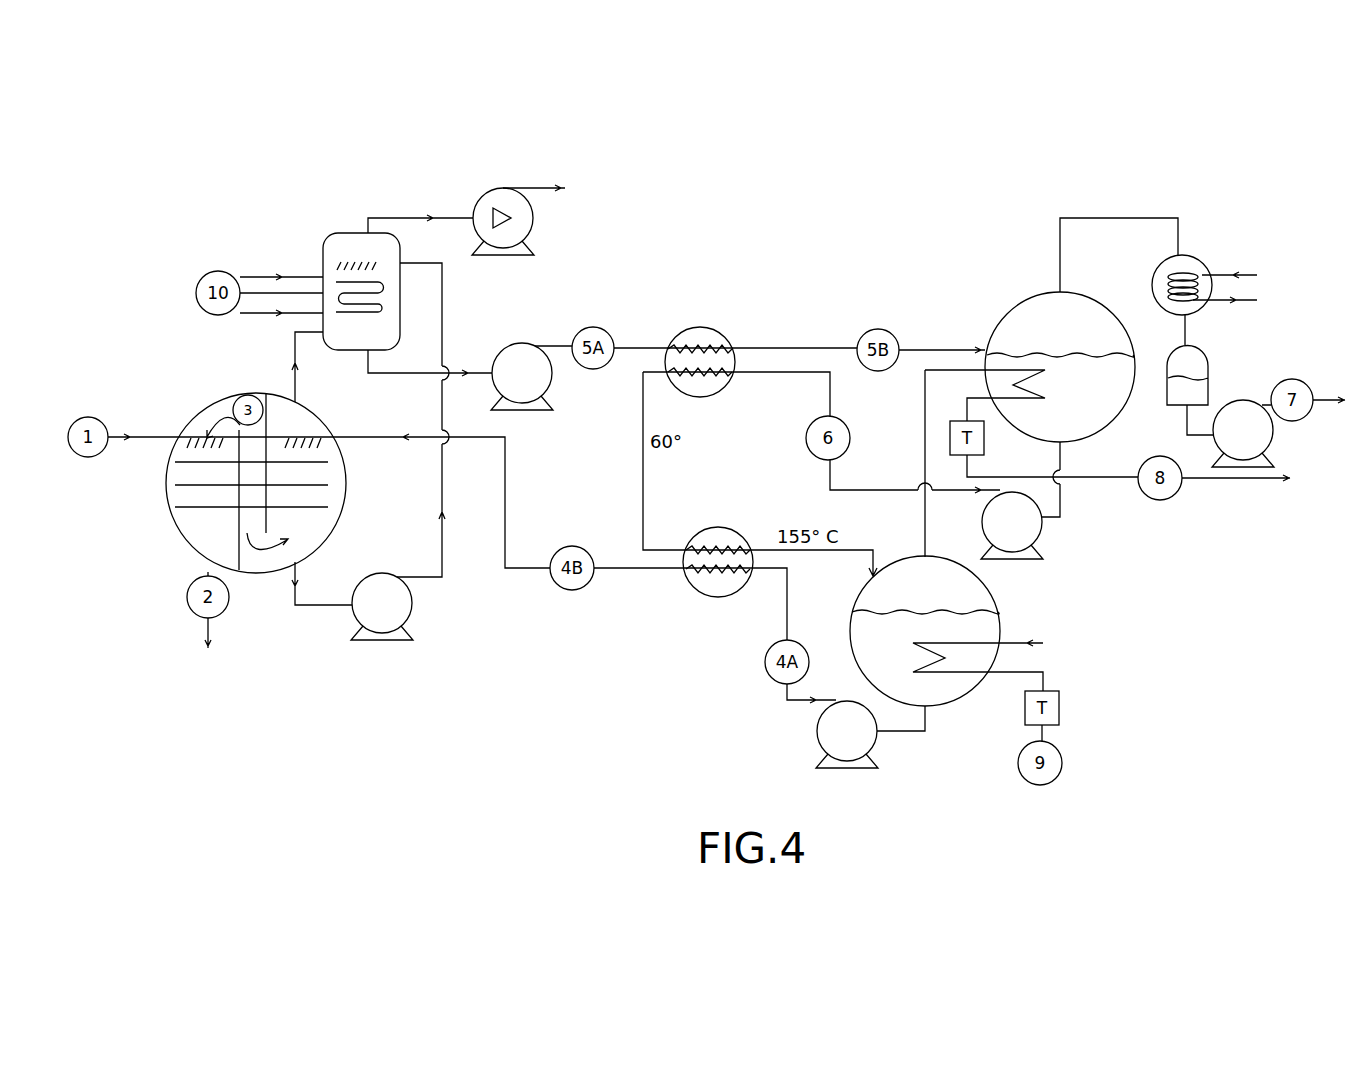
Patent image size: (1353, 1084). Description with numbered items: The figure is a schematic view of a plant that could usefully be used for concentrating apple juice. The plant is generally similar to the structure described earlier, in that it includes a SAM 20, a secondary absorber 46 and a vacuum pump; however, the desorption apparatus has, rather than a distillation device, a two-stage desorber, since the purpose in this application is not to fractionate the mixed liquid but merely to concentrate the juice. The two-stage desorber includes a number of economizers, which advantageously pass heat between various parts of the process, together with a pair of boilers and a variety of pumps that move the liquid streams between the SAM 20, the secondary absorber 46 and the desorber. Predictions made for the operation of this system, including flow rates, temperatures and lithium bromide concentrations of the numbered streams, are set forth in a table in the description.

The SAM 20 is at (204, 381).
The secondary absorber 46 is at (322, 221).